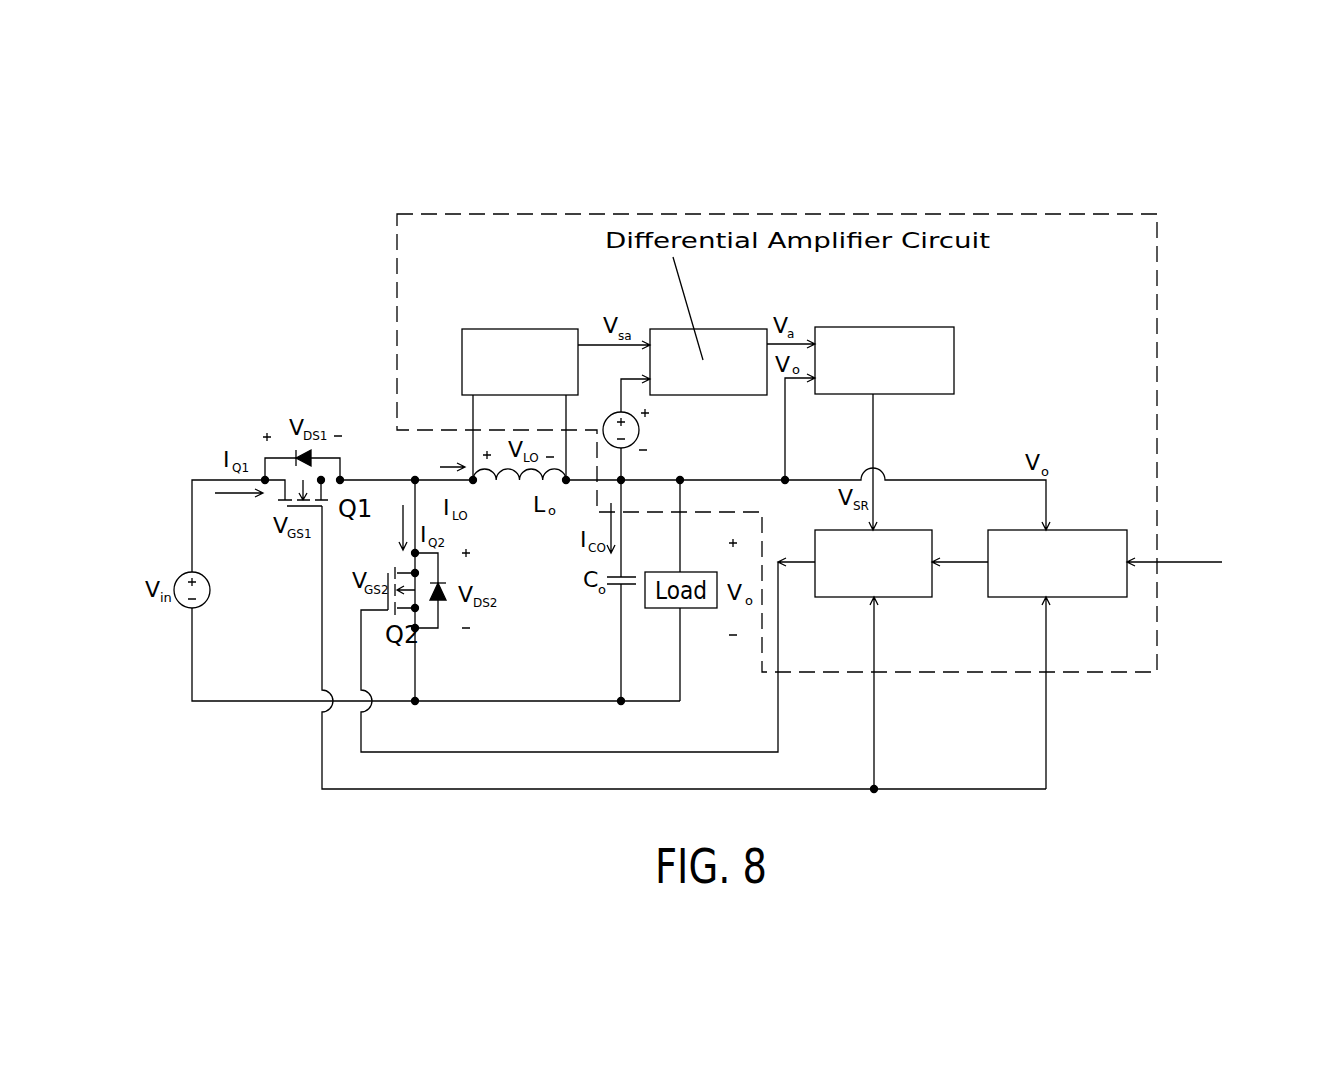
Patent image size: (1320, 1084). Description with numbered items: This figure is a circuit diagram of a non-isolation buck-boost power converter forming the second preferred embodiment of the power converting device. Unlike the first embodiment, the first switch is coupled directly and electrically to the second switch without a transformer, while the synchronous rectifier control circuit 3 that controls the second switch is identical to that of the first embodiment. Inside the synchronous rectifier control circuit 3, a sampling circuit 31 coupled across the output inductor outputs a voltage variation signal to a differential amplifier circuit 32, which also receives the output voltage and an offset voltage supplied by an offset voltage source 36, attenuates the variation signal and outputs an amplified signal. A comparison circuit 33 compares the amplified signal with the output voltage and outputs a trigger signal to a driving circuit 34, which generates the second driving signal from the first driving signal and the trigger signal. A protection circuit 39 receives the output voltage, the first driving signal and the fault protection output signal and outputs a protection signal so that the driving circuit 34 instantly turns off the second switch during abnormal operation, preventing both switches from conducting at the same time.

The synchronous rectifier control circuit 3 is at (1157, 296).
The sampling circuit 31 is at (540, 328).
The differential amplifier circuit 32 is at (727, 328).
The comparison circuit 33 is at (893, 327).
The driving circuit 34 is at (892, 530).
The offset voltage source 36 is at (607, 417).
The protection circuit 39 is at (1065, 530).